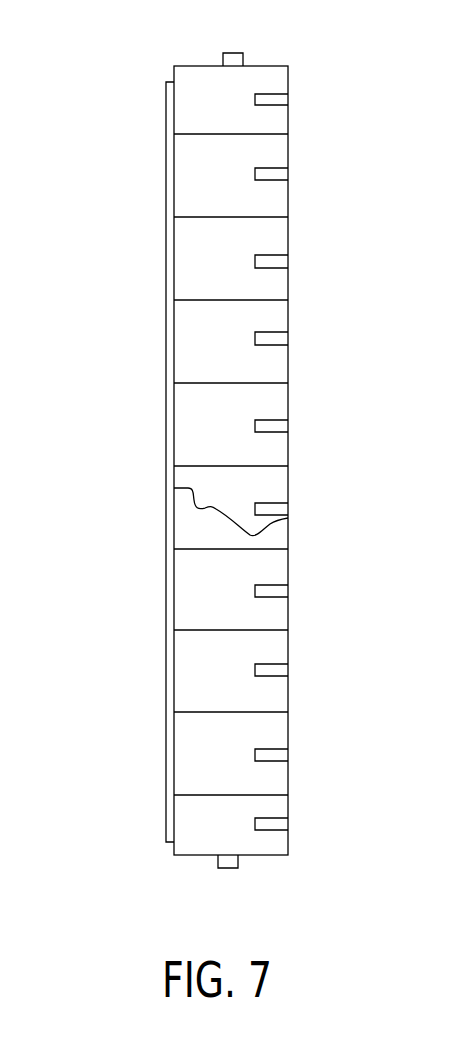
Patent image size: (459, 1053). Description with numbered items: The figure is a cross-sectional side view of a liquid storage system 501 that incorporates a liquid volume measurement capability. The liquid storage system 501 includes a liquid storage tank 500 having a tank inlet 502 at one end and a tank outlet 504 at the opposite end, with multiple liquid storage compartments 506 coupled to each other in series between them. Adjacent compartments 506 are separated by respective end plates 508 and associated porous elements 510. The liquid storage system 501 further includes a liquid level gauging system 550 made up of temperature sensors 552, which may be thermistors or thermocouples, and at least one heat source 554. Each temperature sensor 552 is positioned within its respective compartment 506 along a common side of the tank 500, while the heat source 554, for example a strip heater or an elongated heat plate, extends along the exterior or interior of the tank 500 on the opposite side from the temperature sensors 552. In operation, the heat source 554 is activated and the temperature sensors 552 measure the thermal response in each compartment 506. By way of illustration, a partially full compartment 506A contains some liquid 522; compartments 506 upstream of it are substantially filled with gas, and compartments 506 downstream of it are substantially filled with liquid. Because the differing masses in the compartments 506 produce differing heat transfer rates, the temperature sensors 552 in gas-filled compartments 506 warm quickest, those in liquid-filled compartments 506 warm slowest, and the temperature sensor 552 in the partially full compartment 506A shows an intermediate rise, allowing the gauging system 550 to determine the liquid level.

The liquid storage tank 500 is at (123, 242).
The liquid storage system 501 is at (98, 107).
The tank inlet 502 is at (245, 62).
The tank outlet 504 is at (236, 865).
The liquid storage compartment 506 is at (256, 117).
The partially full compartment 506A is at (256, 485).
The end plate 508 is at (207, 135).
The porous element 510 is at (195, 304).
The liquid 522 is at (185, 530).
The liquid level gauging system 550 is at (329, 601).
The temperature sensor 552 is at (284, 669).
The heat source 554 is at (167, 690).